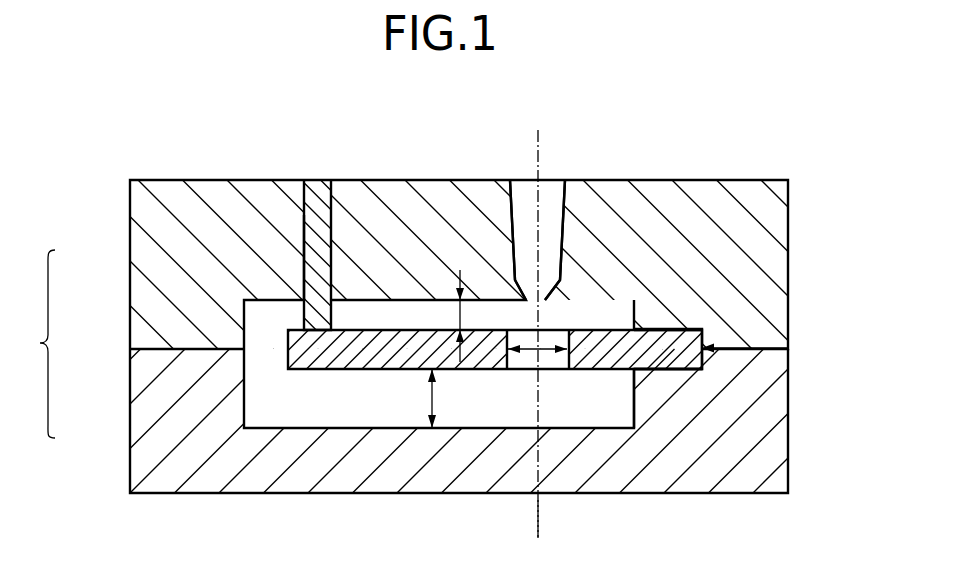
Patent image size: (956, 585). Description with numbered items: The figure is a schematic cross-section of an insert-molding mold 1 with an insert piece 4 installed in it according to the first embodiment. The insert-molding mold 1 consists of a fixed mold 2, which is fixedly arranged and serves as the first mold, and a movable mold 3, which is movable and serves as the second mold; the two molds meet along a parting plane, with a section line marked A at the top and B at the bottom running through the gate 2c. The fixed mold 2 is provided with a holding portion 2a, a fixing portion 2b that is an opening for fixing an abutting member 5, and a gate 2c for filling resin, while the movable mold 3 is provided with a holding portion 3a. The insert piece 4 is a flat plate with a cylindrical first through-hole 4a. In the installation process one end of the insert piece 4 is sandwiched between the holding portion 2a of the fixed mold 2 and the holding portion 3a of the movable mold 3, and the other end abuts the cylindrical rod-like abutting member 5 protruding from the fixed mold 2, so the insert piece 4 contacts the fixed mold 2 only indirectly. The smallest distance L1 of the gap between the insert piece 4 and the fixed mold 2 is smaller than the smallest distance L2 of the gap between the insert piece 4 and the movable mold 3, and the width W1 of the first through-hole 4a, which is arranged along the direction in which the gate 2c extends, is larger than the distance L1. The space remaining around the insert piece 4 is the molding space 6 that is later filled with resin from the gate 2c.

The insert-molding mold 1 is at (40, 343).
The fixed mold 2 is at (150, 263).
The movable mold 3 is at (150, 420).
The insert piece 4 is at (304, 362).
The abutting member 5 is at (316, 190).
The molding space 6 is at (635, 397).
The holding portion 2a is at (670, 333).
The fixing portion 2b is at (304, 214).
The gate 2c is at (512, 216).
The holding portion 3a is at (671, 366).
The first through-hole 4a is at (572, 337).
The smallest distance L1 is at (459, 314).
The smallest distance L2 is at (436, 402).
The width W1 is at (528, 352).
The section line A is at (538, 148).
The section line B is at (538, 525).